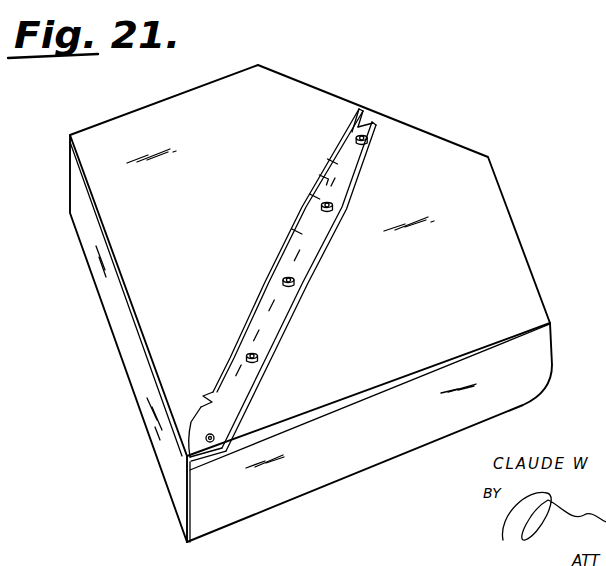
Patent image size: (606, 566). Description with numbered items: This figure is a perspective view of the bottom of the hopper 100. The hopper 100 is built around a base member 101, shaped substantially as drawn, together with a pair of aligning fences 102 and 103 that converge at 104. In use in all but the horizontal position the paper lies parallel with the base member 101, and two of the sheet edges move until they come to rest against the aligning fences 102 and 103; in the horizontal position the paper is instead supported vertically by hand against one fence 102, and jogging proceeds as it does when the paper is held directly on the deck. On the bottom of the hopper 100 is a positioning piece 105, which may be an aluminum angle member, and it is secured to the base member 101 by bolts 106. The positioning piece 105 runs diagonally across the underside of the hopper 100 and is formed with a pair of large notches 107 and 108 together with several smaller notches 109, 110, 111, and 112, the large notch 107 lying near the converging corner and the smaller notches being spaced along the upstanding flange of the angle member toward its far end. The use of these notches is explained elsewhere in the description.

The hopper 100 is at (321, 303).
The base member 101 is at (228, 192).
The aligning fence 102 is at (412, 433).
The aligning fence 103 is at (137, 384).
The convergence point of the aligning fences 104 is at (186, 506).
The positioning piece 105 is at (240, 399).
The bolts 106 is at (298, 284).
The large notch 107 is at (206, 399).
The large notch 108 is at (327, 180).
The small notch 109 is at (298, 233).
The small notch 110 is at (320, 196).
The small notch 111 is at (337, 160).
The small notch 112 is at (353, 132).